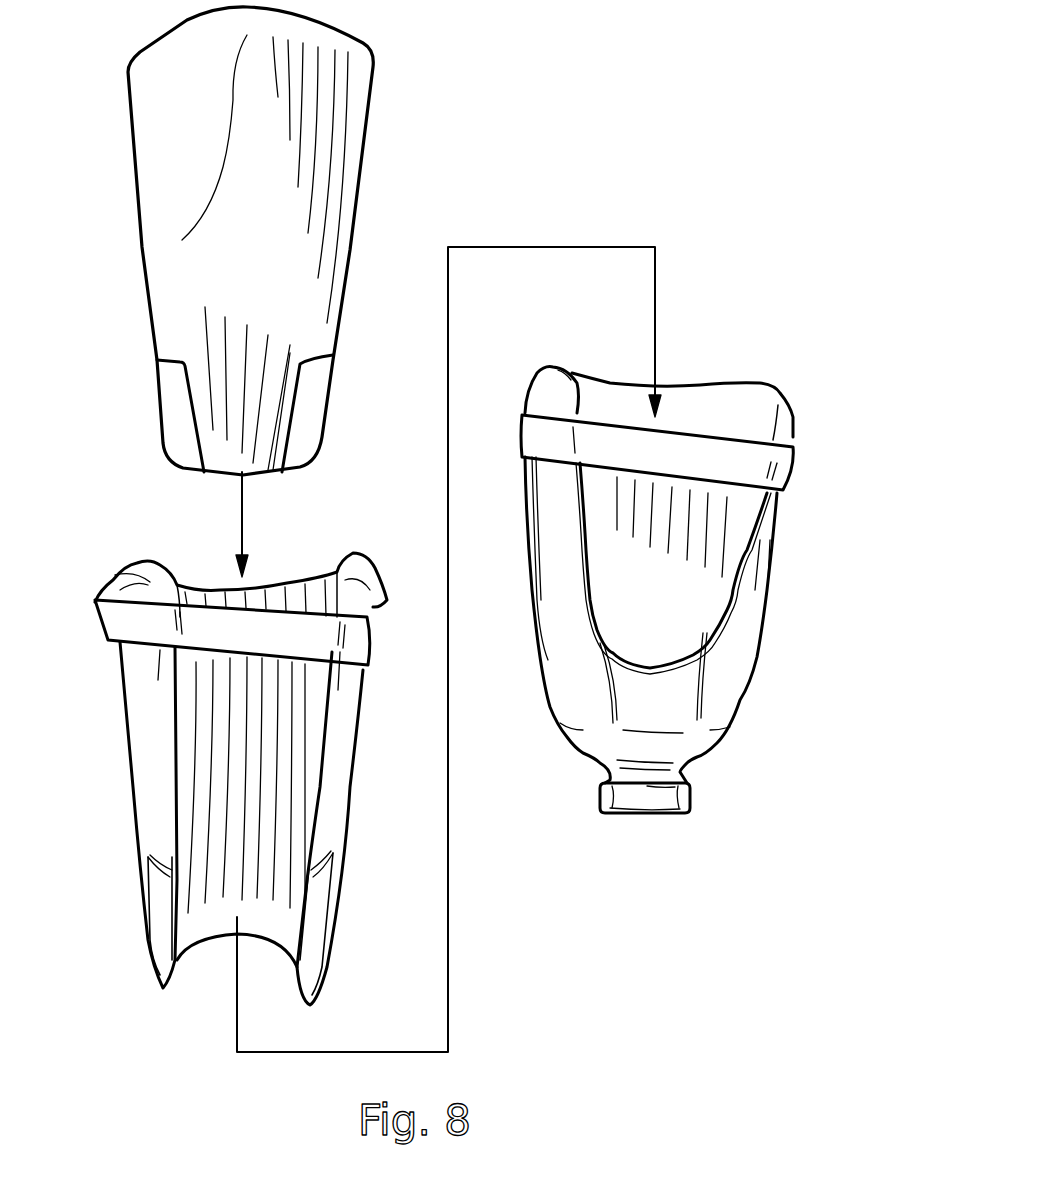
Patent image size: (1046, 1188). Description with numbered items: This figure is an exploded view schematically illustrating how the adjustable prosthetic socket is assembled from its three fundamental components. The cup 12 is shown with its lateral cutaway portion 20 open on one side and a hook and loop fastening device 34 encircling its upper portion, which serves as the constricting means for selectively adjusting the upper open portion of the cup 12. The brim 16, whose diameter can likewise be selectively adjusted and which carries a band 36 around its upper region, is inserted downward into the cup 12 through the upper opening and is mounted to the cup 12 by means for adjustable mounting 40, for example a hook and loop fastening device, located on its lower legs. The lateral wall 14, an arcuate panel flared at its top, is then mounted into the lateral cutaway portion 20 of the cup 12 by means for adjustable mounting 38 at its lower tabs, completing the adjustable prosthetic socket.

The cup 12 is at (773, 587).
The lateral wall 14 is at (365, 157).
The brim 16 is at (127, 722).
The lateral cutaway portion 20 is at (700, 647).
The hook and loop fastening device 34 is at (787, 475).
The band 36 is at (127, 618).
The means for adjustable mounting 38 is at (167, 415).
The means for adjustable mounting 40 is at (153, 898).